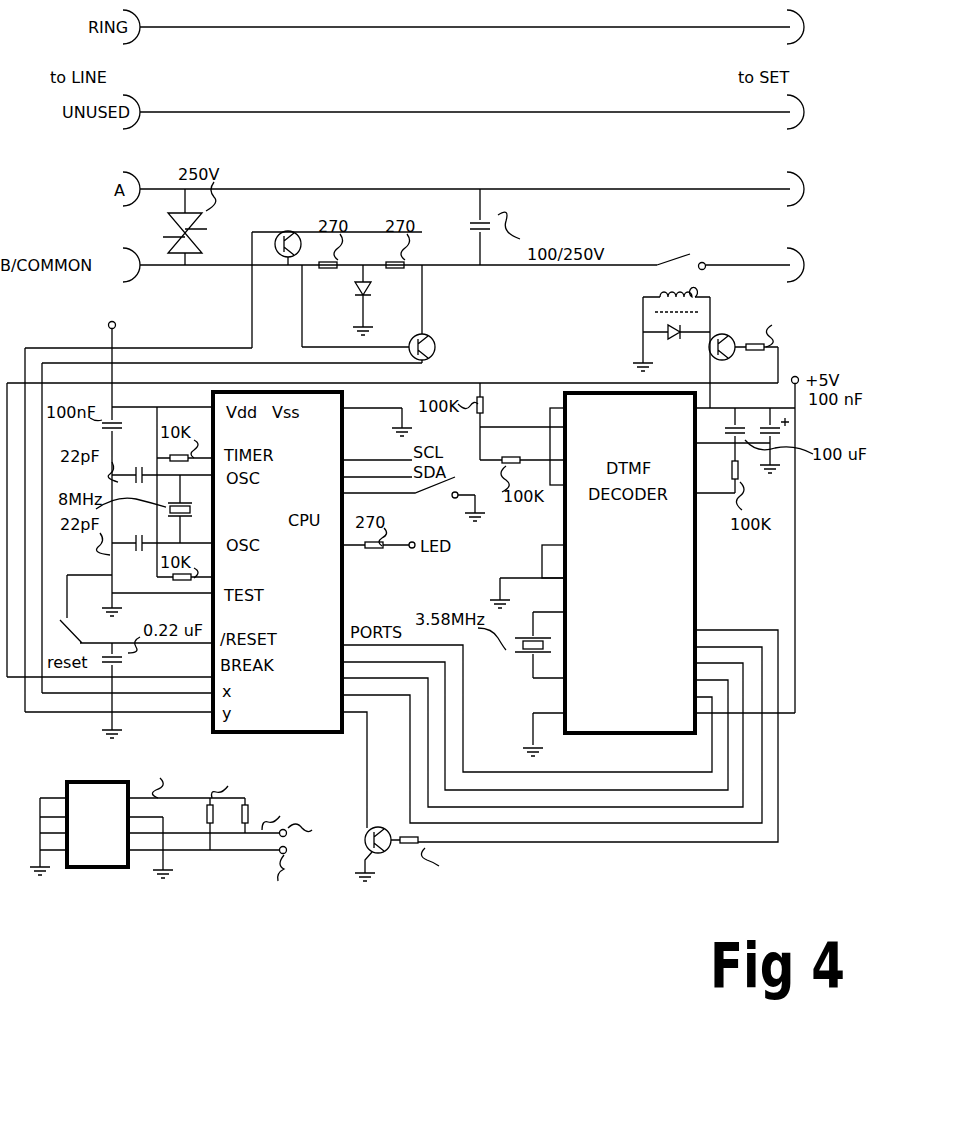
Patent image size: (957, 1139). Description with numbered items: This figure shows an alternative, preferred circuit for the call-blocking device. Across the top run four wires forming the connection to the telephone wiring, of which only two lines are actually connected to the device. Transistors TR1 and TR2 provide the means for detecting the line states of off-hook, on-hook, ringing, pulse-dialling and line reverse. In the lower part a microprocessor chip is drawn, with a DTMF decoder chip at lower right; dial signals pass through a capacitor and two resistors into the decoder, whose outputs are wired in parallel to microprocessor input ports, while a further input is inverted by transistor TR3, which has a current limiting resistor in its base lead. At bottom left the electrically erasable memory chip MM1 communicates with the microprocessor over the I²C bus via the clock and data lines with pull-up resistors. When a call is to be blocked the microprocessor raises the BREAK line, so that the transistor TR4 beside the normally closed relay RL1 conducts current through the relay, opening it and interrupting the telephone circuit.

The transistor TR1 is at (298, 237).
The transistor TR2 is at (438, 354).
The transistor TR3 is at (388, 858).
The transistor TR4 is at (730, 347).
The normally closed relay RL1 is at (695, 262).
The electrically erasable and reprogrammable memory chip MM1 is at (75, 781).